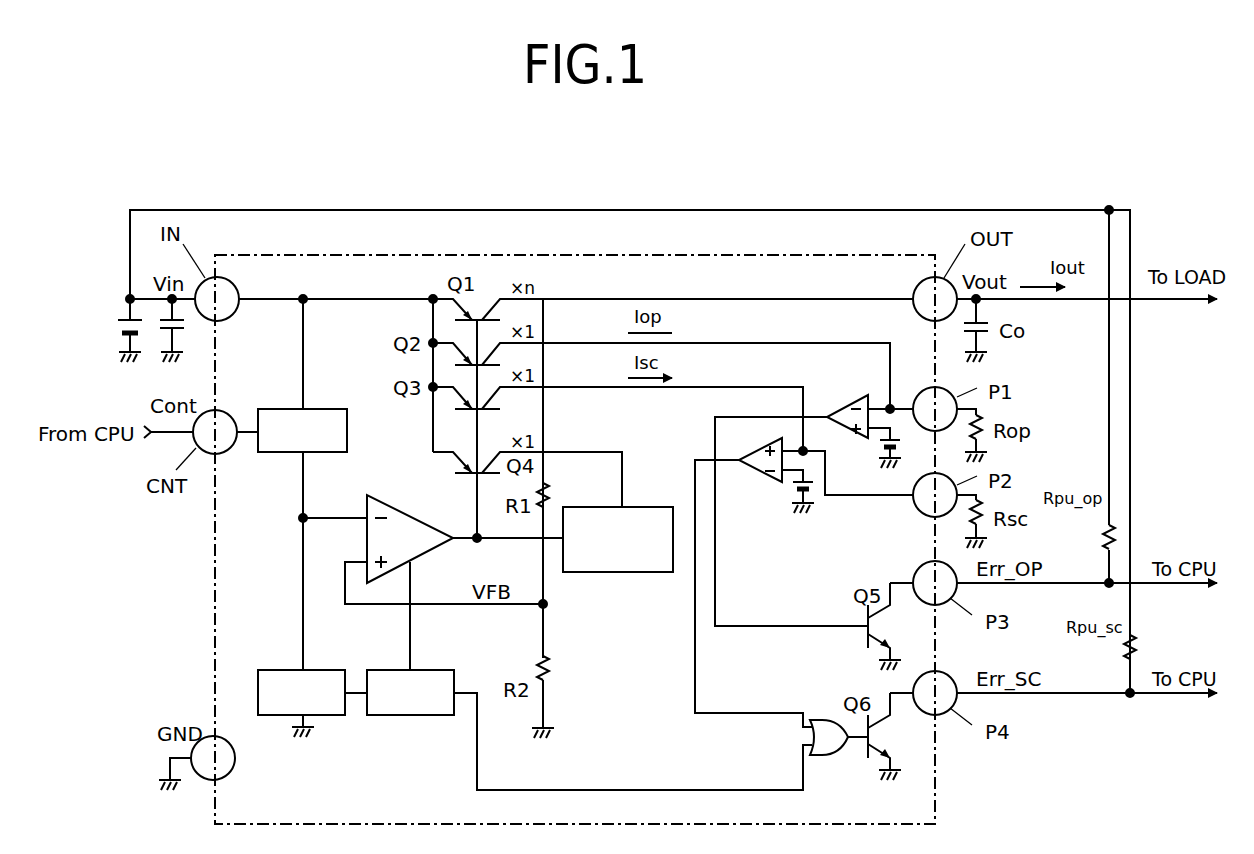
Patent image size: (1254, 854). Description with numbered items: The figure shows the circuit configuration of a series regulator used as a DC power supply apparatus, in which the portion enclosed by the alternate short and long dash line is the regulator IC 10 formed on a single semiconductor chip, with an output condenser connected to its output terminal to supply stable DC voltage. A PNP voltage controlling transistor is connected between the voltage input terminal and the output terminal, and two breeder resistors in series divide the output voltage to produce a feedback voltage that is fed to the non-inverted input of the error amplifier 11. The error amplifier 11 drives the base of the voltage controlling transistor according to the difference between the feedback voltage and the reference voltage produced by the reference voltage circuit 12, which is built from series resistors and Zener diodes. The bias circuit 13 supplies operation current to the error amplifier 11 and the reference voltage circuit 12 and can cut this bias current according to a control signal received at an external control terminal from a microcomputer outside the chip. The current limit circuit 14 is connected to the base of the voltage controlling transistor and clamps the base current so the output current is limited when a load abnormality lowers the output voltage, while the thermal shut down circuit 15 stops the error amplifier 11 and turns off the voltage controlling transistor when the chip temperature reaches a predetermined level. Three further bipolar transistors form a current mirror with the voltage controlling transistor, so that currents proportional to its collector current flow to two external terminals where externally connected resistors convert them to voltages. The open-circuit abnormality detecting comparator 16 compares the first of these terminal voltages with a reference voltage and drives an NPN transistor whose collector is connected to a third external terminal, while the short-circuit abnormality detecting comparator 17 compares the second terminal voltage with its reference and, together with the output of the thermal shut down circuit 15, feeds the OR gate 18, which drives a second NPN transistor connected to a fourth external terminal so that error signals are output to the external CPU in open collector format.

The regulator IC 10 is at (700, 254).
The error amplifier 11 is at (397, 507).
The reference voltage circuit 12 is at (282, 670).
The bias circuit 13 is at (323, 408).
The current limit circuit 14 is at (622, 573).
The thermal shut down circuit 15 is at (410, 715).
The open-circuit abnormality detecting comparator 16 is at (845, 403).
The short-circuit abnormality detecting comparator 17 is at (752, 473).
The OR gate 18 is at (828, 752).